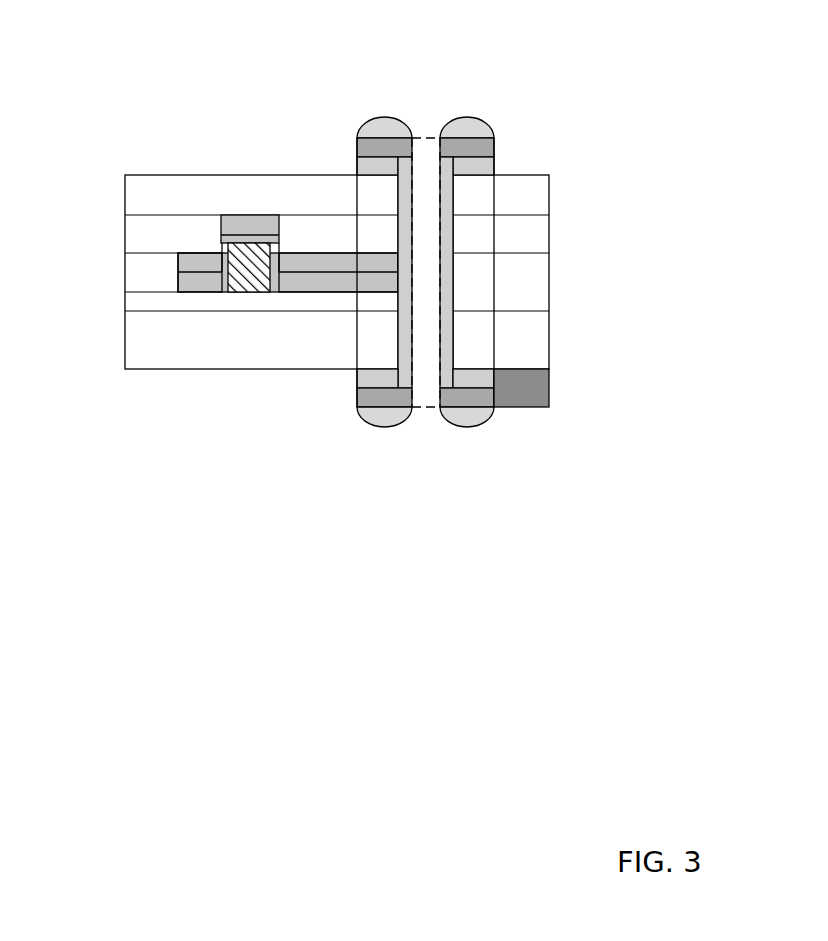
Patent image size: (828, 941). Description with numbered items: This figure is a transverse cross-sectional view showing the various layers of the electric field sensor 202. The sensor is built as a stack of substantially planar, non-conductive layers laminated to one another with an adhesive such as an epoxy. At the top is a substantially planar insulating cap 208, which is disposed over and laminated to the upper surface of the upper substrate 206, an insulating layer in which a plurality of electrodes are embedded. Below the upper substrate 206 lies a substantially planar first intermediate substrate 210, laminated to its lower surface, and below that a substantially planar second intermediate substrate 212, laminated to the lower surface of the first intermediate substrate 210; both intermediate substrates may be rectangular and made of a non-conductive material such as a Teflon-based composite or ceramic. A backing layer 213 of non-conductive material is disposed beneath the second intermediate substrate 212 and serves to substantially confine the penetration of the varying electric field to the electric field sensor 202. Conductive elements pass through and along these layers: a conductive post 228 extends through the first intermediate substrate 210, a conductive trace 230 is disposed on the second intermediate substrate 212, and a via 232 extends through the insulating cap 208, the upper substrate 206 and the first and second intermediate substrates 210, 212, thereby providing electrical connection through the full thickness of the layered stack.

The electric field sensor 202 is at (198, 693).
The upper substrate 206 is at (130, 242).
The insulating cap 208 is at (130, 192).
The first intermediate substrate 210 is at (317, 250).
The second intermediate substrate 212 is at (130, 300).
The backing layer 213 is at (130, 353).
The conductive post 228 is at (241, 250).
The conductive trace 230 is at (189, 271).
The via 232 is at (427, 142).